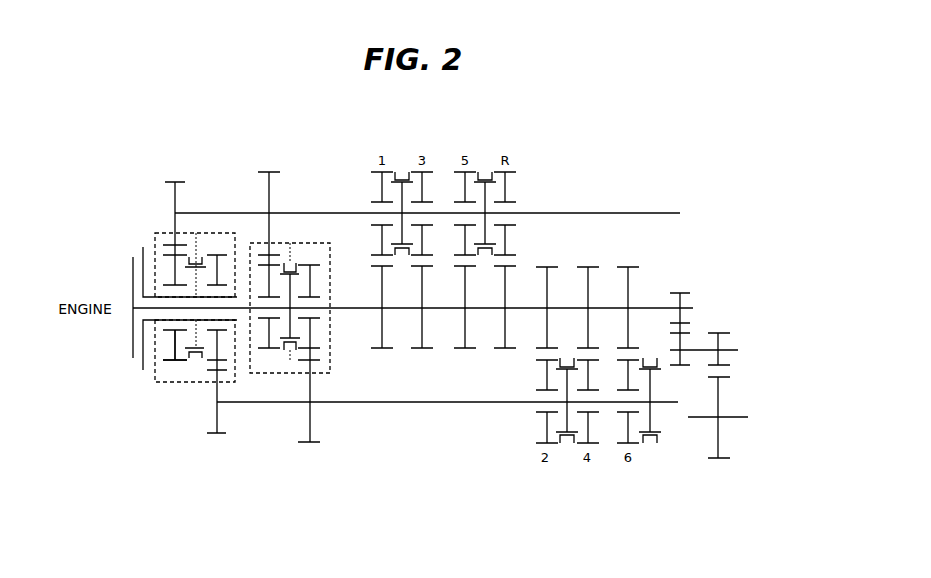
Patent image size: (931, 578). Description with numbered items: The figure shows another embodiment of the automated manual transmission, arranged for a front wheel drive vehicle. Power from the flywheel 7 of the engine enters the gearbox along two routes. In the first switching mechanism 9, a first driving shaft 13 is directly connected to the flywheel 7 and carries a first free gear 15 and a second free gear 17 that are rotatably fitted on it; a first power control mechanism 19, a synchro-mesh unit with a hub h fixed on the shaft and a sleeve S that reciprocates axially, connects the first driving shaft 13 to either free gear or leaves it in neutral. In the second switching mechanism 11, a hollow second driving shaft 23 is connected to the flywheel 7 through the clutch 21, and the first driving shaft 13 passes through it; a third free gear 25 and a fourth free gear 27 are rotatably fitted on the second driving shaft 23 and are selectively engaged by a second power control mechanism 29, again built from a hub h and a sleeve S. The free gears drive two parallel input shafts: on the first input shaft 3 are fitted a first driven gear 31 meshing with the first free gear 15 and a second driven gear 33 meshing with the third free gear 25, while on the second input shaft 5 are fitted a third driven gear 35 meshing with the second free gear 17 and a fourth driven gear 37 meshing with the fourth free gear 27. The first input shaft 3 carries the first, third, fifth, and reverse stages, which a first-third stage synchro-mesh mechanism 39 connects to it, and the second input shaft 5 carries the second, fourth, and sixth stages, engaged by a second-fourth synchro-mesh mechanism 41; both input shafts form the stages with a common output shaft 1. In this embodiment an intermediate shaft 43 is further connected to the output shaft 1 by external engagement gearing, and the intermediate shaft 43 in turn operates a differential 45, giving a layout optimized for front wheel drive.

The output shaft 1 is at (653, 307).
The first input shaft 3 is at (607, 213).
The second input shaft 5 is at (463, 403).
The flywheel 7 is at (132, 325).
The first switching mechanism 9 is at (330, 373).
The second switching mechanism 11 is at (150, 370).
The first driving shaft 13 is at (143, 297).
The first free gear 15 is at (263, 374).
The second free gear 17 is at (318, 242).
The first power control mechanism 19 is at (290, 362).
The clutch 21 is at (123, 258).
The second driving shaft 23 is at (162, 328).
The third free gear 25 is at (168, 362).
The fourth free gear 27 is at (222, 253).
The second power control mechanism 29 is at (192, 366).
The first driven gear 31 is at (272, 170).
The second driven gear 33 is at (169, 172).
The third driven gear 35 is at (308, 443).
The fourth driven gear 37 is at (213, 434).
The first-third stage synchro-mesh mechanism 39 is at (402, 169).
The second-fourth synchro-mesh mechanism 41 is at (566, 450).
The intermediate shaft 43 is at (734, 350).
The differential 45 is at (707, 436).
The sleeve S is at (197, 256).
The hub h is at (195, 267).